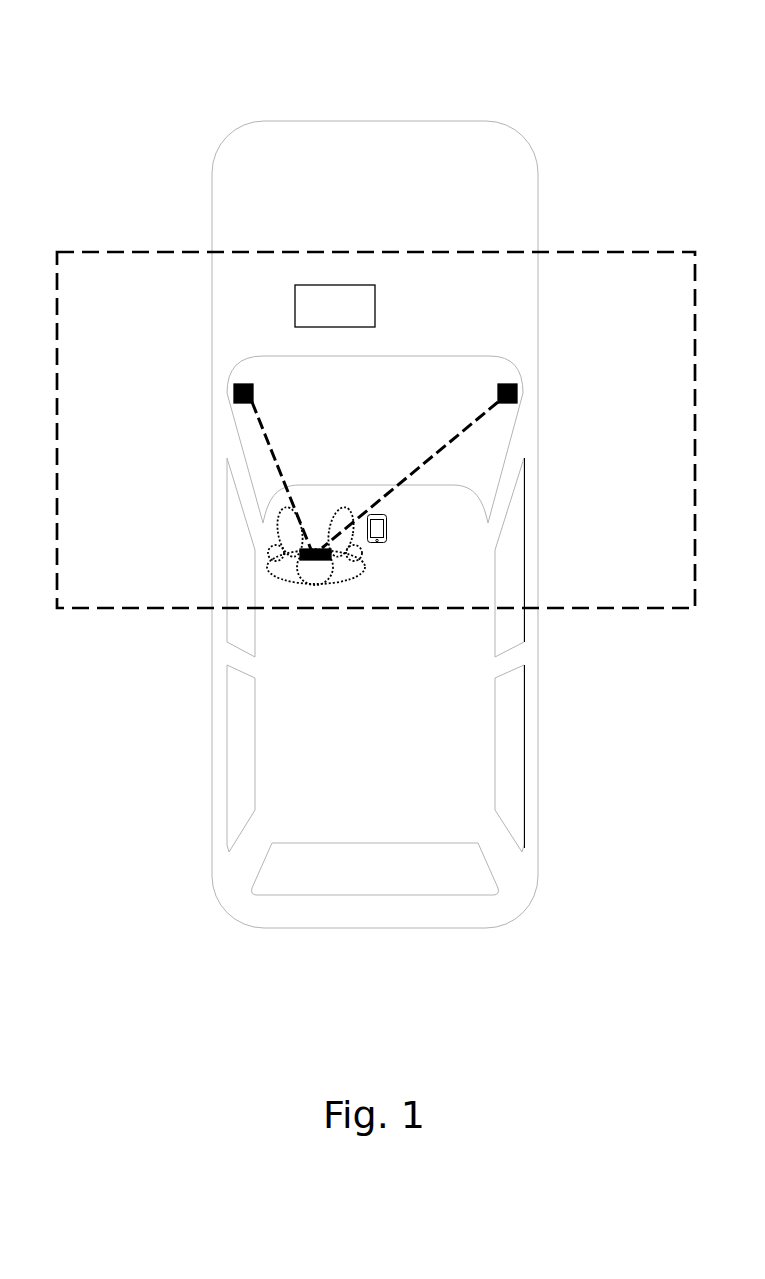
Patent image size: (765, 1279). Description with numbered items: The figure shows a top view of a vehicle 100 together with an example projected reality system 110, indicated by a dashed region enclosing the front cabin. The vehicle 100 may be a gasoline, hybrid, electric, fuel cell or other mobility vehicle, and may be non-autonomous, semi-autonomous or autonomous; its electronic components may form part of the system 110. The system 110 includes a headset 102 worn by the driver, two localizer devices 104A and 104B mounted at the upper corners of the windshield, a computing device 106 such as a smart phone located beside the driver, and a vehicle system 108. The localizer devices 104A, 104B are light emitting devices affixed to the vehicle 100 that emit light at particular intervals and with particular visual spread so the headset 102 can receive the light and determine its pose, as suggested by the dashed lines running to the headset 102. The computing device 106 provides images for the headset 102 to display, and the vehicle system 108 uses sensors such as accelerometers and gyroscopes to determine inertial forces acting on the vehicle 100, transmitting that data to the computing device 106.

The vehicle 100 is at (235, 131).
The projected reality system 110 is at (132, 252).
The vehicle system 108 is at (335, 306).
The localizer device 104A is at (240, 386).
The localizer device 104B is at (517, 386).
The headset 102 is at (300, 553).
The computing device 106 is at (387, 523).